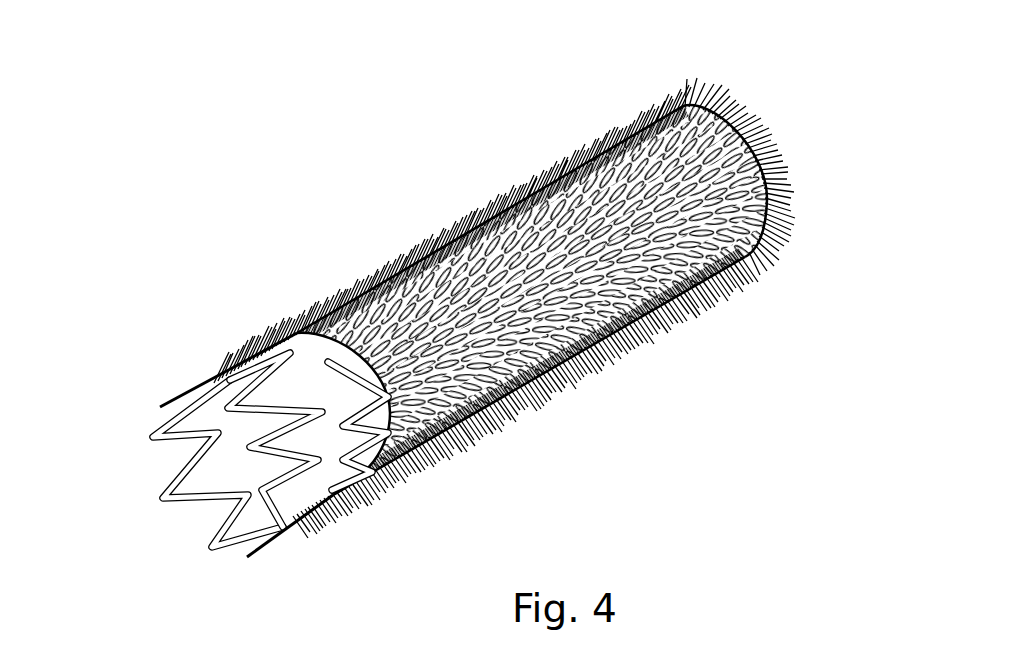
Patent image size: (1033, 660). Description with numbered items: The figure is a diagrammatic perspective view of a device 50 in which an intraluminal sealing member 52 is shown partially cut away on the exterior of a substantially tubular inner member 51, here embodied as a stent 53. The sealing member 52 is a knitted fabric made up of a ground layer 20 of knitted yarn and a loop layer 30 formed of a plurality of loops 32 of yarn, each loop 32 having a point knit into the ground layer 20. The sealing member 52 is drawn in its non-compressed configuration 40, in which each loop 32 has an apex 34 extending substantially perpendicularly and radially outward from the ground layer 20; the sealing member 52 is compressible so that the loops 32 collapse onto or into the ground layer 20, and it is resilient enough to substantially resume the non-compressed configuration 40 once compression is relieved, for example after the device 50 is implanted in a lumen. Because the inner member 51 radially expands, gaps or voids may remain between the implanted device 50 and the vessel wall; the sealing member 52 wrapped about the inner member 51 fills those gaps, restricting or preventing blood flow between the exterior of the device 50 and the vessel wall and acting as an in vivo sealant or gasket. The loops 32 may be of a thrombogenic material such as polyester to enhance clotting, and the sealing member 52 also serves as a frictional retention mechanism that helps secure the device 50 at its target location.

The ground layer 20 is at (763, 157).
The loop layer 30 is at (535, 128).
The loops 32 is at (390, 240).
The apex 34 is at (285, 297).
The non-compressed configuration 40 is at (817, 273).
The device 50 is at (305, 75).
The inner member 51 is at (237, 553).
The intraluminal sealing member 52 is at (690, 372).
The stent 53 is at (150, 430).